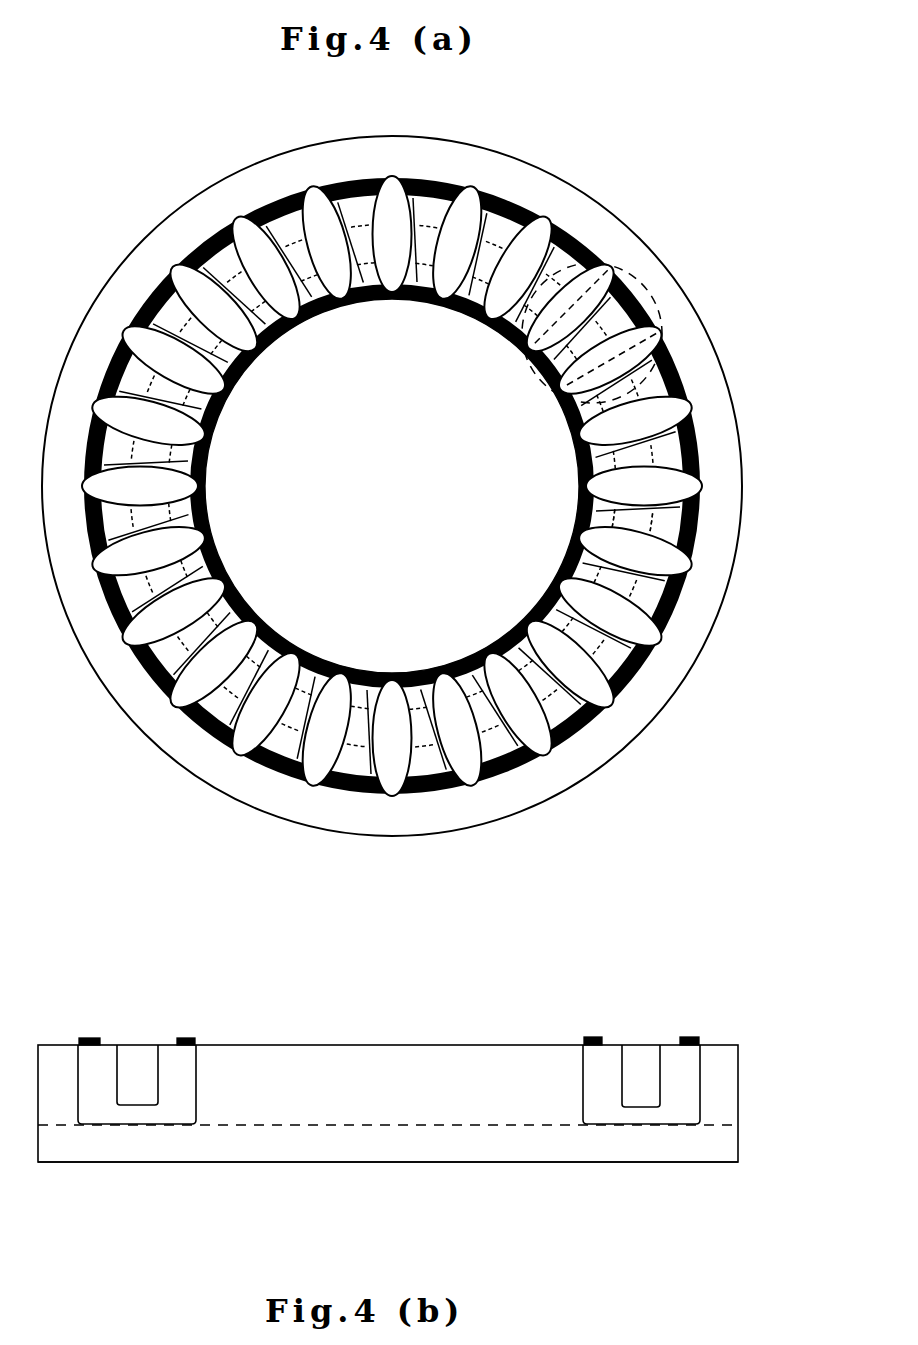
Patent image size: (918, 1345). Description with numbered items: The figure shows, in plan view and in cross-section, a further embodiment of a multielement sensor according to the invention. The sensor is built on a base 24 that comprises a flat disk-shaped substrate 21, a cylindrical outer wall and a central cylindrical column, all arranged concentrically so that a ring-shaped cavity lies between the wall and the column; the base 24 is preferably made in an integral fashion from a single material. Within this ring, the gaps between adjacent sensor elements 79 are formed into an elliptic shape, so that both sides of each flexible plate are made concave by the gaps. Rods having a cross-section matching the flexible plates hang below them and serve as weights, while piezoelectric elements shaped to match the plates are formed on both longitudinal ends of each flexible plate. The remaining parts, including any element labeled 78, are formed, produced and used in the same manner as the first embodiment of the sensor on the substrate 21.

The disk-shaped substrate 21 is at (547, 1148).
The base 24 is at (276, 1152).
The coil 78 is at (637, 415).
The sensor elements 79 is at (650, 290).